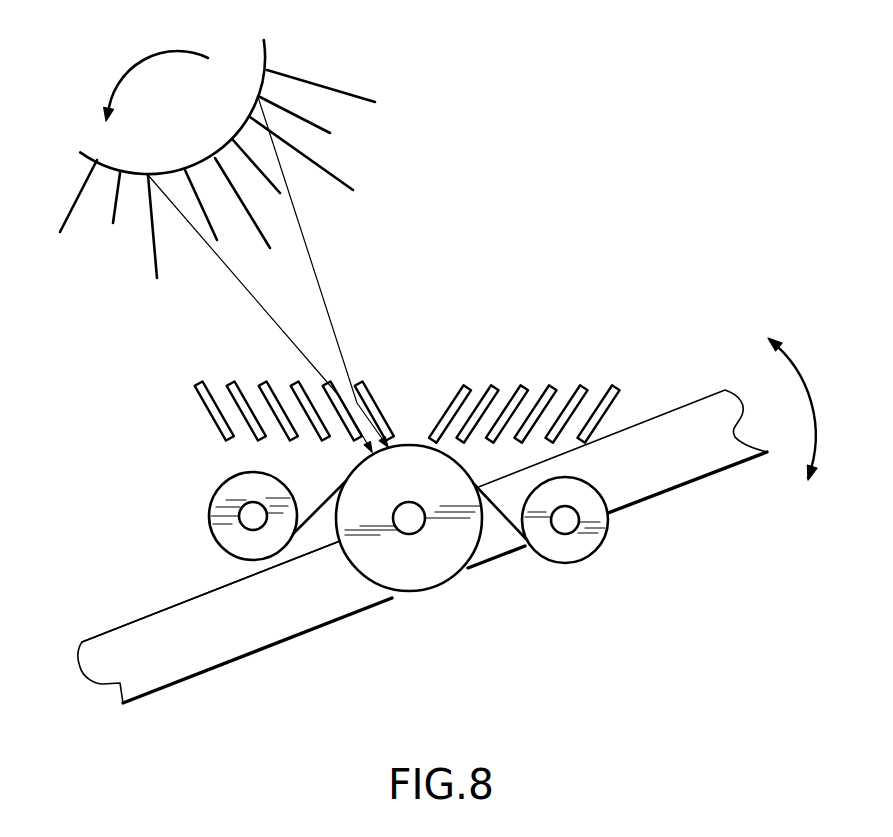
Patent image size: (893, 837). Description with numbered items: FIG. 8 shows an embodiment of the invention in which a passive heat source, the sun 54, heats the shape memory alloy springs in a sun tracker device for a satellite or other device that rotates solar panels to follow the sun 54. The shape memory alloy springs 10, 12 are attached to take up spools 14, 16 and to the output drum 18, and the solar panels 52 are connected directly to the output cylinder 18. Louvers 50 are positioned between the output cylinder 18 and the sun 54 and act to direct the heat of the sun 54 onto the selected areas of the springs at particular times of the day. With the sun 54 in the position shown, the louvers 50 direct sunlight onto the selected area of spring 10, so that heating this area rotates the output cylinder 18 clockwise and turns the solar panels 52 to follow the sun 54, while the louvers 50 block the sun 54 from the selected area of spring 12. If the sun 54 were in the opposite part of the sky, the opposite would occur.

The shape memory alloy spring 10 is at (381, 534).
The shape memory alloy spring 12 is at (507, 522).
The take up spool 14 is at (242, 545).
The take up spool 16 is at (567, 543).
The output drum 18 is at (420, 562).
The louvers 50 is at (200, 404).
The solar panels 52 is at (225, 640).
The light source 54 is at (200, 114).